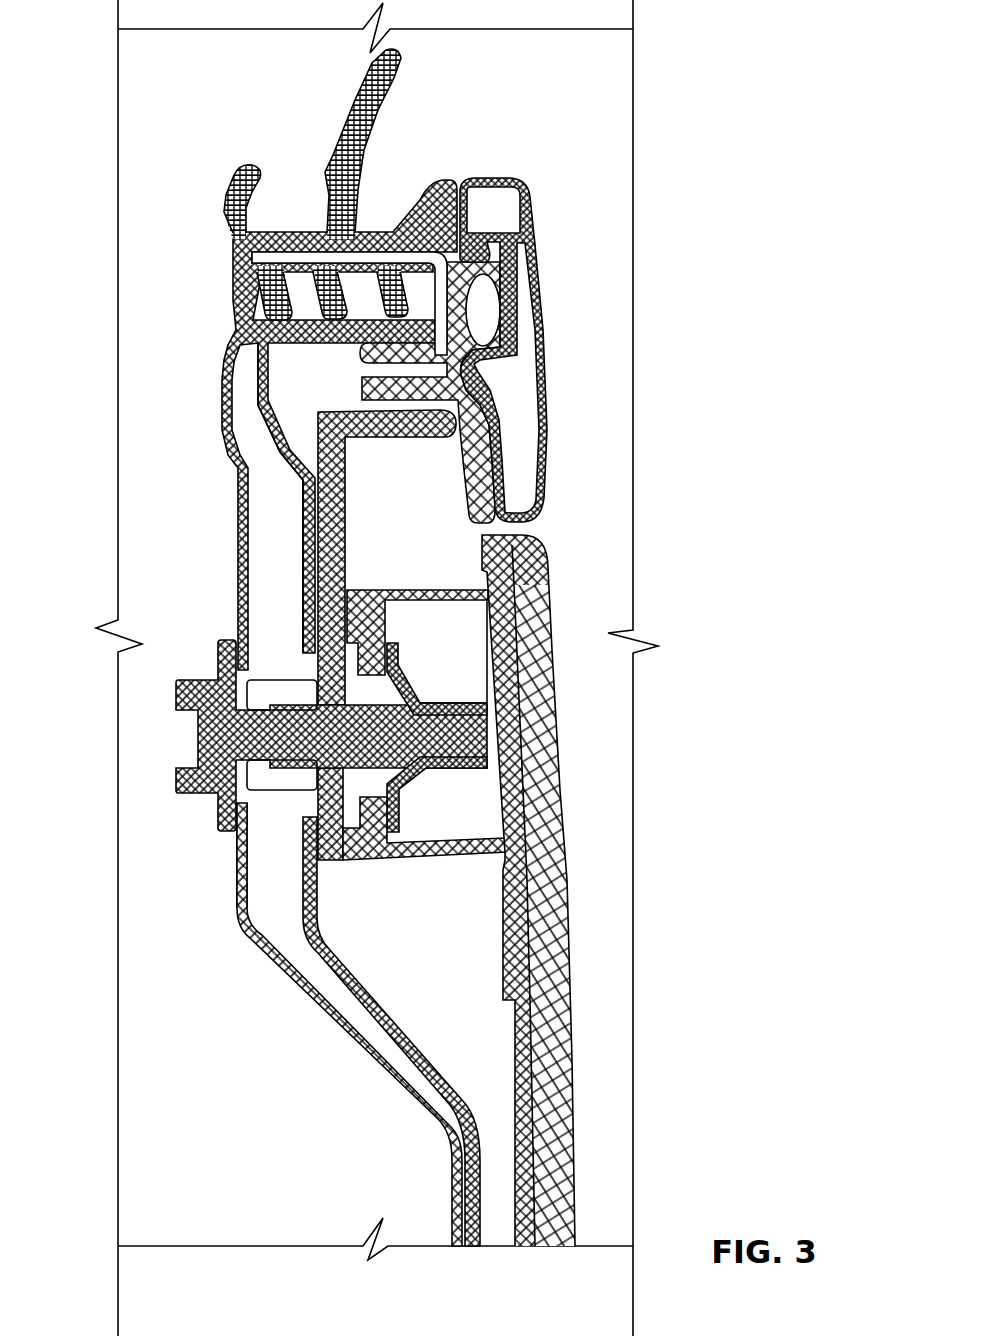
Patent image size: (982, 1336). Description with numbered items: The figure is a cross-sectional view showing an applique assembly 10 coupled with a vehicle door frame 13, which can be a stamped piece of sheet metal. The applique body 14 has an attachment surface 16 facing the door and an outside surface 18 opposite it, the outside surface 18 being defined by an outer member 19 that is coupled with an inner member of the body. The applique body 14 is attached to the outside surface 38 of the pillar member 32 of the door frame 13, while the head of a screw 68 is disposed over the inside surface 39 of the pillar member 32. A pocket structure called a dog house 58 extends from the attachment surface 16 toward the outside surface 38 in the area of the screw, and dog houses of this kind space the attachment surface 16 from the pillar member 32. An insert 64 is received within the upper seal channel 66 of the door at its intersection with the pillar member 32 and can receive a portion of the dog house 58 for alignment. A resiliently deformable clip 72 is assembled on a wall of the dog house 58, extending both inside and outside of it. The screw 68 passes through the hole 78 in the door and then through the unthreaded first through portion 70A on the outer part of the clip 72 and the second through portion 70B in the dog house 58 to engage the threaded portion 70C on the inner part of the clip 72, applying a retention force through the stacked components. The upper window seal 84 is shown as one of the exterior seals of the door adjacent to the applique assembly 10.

The applique assembly 10 is at (413, 973).
The door frame 13 is at (222, 362).
The applique body 14 is at (526, 890).
The attachment surface 16 is at (505, 1053).
The outside surface 18 is at (573, 1053).
The outer member 19 is at (553, 963).
The pillar member 32 is at (290, 930).
The outside surface 38 is at (333, 937).
The inside surface 39 is at (235, 857).
The dog house 58 is at (405, 592).
The insert 64 is at (334, 497).
The upper seal channel 66 is at (299, 447).
The screw 68 is at (210, 730).
The first through portion 70A is at (352, 697).
The second through portion 70B is at (373, 797).
The threaded portion 70C is at (467, 704).
The clip 72 is at (400, 812).
The hole 78 is at (233, 775).
The upper window seal 84 is at (556, 437).